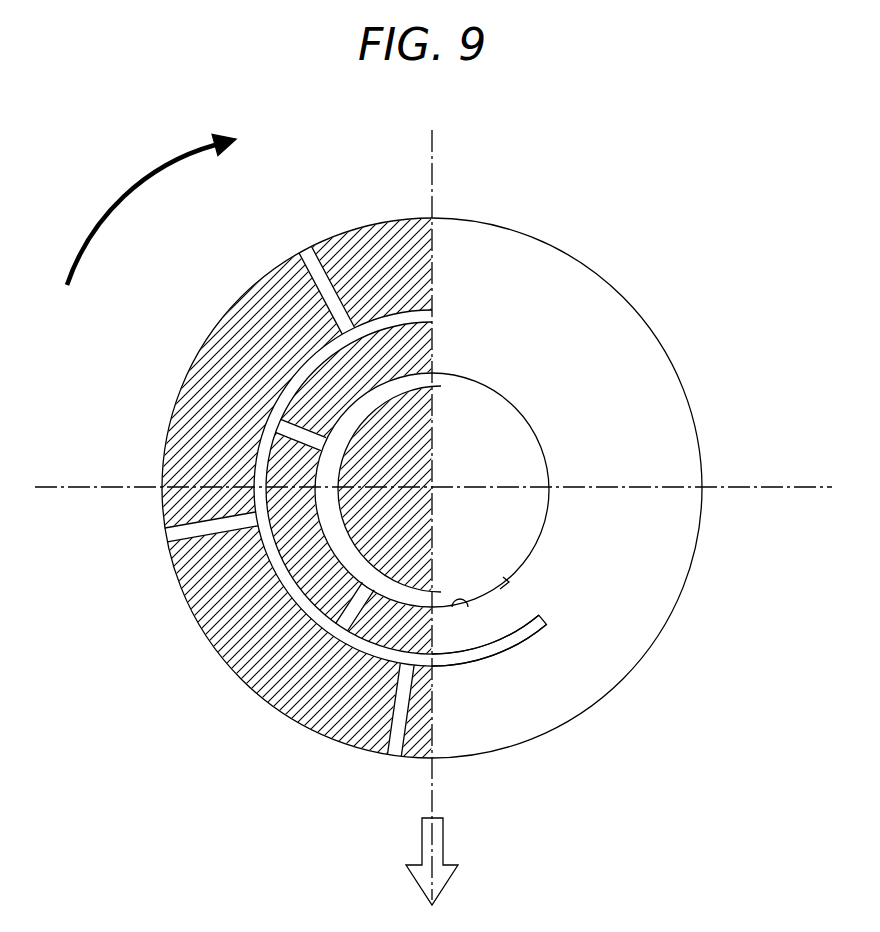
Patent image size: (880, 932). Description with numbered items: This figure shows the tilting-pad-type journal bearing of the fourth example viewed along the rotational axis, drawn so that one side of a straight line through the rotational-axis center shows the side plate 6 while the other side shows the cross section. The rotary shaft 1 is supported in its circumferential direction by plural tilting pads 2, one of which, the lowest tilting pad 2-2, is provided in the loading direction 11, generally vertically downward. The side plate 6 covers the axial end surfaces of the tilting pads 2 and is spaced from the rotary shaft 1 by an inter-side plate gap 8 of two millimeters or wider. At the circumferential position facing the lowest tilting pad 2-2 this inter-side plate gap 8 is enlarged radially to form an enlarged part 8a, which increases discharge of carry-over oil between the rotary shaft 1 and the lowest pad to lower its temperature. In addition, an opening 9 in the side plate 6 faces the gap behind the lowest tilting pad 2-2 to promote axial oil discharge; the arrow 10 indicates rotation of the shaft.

The rotary shaft 1 is at (357, 550).
The tilting pad 2 is at (365, 632).
The side plate 6 is at (532, 275).
The inter-side plate gap 8 is at (475, 585).
The enlarged part 8a is at (466, 598).
The opening 9 is at (527, 637).
The rotation direction 10 is at (133, 183).
The loading direction 11 is at (446, 858).